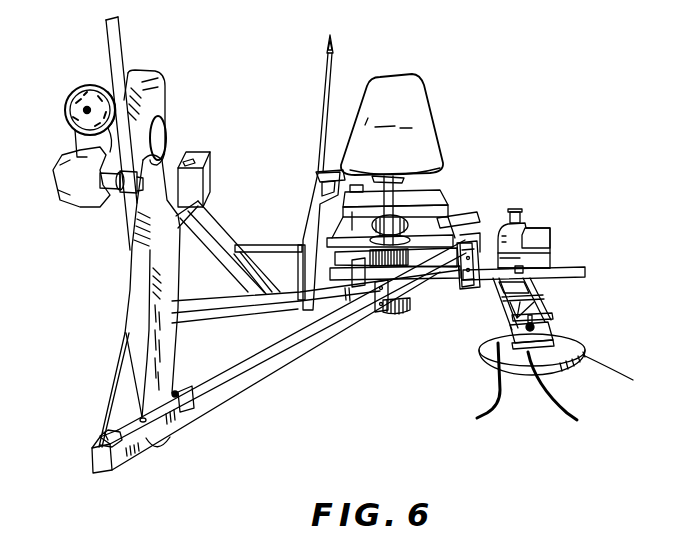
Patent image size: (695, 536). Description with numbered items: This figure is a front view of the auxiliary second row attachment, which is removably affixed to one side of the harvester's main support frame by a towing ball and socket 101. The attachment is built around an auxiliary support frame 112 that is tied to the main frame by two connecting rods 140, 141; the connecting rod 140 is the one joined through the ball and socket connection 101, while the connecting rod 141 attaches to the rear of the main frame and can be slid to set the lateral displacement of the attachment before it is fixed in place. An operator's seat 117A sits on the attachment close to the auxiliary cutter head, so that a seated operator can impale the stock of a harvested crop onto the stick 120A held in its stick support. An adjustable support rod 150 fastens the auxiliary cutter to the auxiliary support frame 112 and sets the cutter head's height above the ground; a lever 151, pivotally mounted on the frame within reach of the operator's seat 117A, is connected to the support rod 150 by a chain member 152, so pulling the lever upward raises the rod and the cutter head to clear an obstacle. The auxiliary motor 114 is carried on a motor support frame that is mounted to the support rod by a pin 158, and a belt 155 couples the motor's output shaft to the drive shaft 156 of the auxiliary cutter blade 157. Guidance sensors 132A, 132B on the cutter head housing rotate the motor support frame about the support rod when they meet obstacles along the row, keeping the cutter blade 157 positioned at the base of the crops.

The towing ball and socket 101 is at (100, 437).
The auxiliary support frame 112 is at (442, 197).
The auxiliary motor 114 is at (551, 245).
The operator's seat 117A is at (400, 92).
The stick 120A is at (334, 65).
The guidance sensor 132A is at (568, 420).
The guidance sensor 132B is at (483, 418).
The connecting rod 140 is at (228, 388).
The connecting rod 141 is at (250, 312).
The adjustable support rod 150 is at (482, 281).
The lever 151 is at (467, 232).
The chain member 152 is at (475, 248).
The belt 155 is at (551, 313).
The drive shaft 156 is at (553, 318).
The auxiliary cutter blade 157 is at (521, 378).
The pin 158 is at (537, 270).